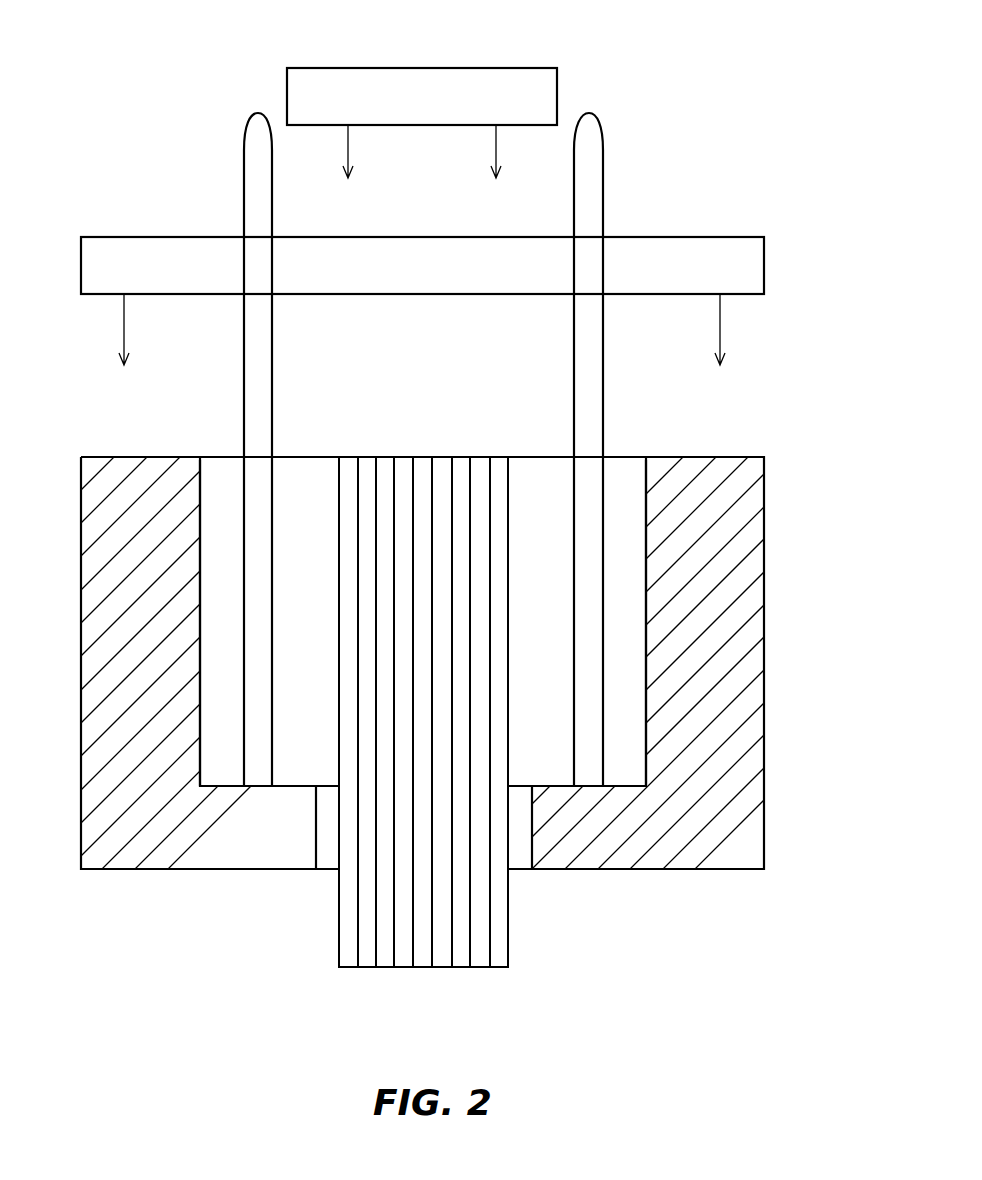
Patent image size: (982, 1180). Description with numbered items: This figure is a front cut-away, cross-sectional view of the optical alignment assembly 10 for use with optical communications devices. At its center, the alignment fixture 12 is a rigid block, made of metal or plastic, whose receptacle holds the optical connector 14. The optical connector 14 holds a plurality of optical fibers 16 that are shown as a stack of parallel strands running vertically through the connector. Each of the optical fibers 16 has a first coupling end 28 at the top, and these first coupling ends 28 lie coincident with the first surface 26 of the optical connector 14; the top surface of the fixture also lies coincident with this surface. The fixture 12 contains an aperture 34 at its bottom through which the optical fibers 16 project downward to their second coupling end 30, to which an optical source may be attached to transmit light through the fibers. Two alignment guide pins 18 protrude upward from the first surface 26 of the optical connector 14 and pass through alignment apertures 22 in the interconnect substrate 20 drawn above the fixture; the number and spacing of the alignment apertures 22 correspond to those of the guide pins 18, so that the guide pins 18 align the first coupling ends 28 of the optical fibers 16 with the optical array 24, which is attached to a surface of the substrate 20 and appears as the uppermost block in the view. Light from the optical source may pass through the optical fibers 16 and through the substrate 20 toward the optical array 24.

The alignment assembly 10 is at (438, 1024).
The alignment fixture 12 is at (767, 537).
The optical connector 14 is at (307, 457).
The optical fibers 16 is at (510, 937).
The alignment guide pins 18 is at (603, 422).
The interconnect substrate 20 is at (206, 296).
The alignment apertures 22 is at (602, 257).
The optical array 24 is at (332, 67).
The first surface of the optical connector 26 is at (537, 457).
The first coupling ends 28 is at (405, 457).
The second coupling end 30 is at (368, 968).
The aperture 34 is at (524, 785).